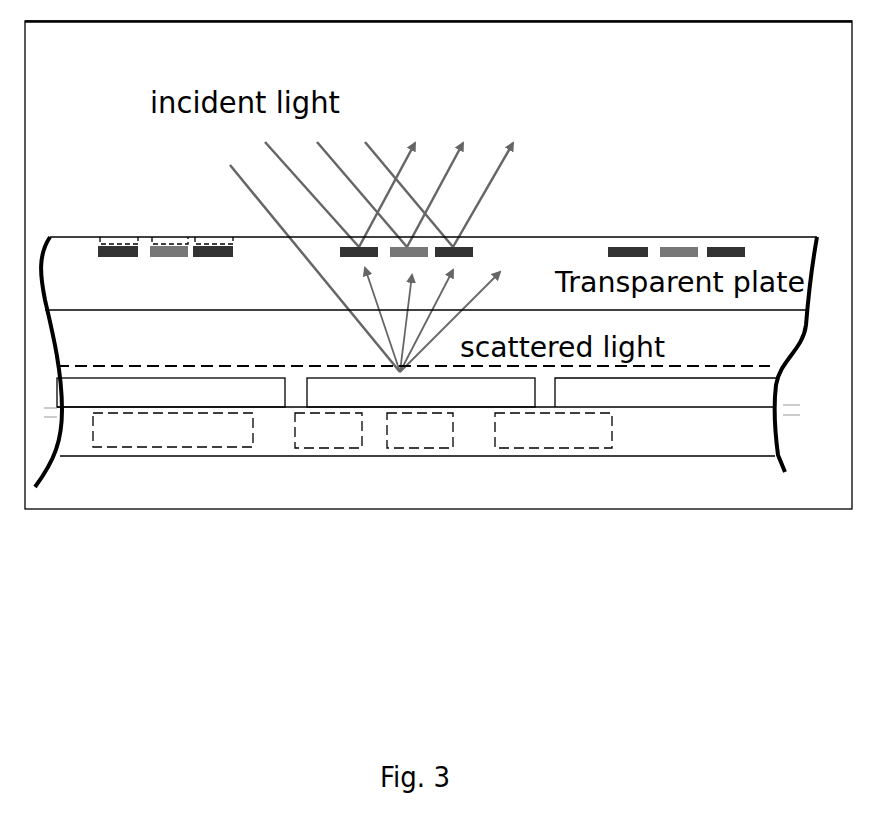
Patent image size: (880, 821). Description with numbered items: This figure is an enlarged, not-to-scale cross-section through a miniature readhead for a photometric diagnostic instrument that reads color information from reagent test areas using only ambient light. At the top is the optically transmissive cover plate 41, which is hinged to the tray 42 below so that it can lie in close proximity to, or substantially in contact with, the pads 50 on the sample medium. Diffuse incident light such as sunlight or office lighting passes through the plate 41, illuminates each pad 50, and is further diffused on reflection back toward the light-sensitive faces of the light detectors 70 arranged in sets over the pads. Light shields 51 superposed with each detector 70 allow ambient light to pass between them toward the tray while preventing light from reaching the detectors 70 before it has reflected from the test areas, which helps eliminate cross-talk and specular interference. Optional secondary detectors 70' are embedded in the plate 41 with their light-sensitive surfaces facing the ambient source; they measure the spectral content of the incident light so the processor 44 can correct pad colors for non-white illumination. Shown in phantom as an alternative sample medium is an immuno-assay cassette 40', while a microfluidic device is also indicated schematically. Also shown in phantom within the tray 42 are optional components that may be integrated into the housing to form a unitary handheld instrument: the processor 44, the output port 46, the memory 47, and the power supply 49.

The cover plate 41 is at (136, 297).
The secondary detectors 70' is at (145, 217).
The light detectors 70 is at (687, 210).
The light shields 51 is at (470, 246).
The immuno-assay cassette 40' is at (413, 347).
The test areas 50 is at (210, 405).
The tray 42 is at (699, 444).
The processor 44 is at (184, 444).
The output port 46 is at (337, 444).
The memory 47 is at (429, 444).
The power supply 49 is at (572, 444).